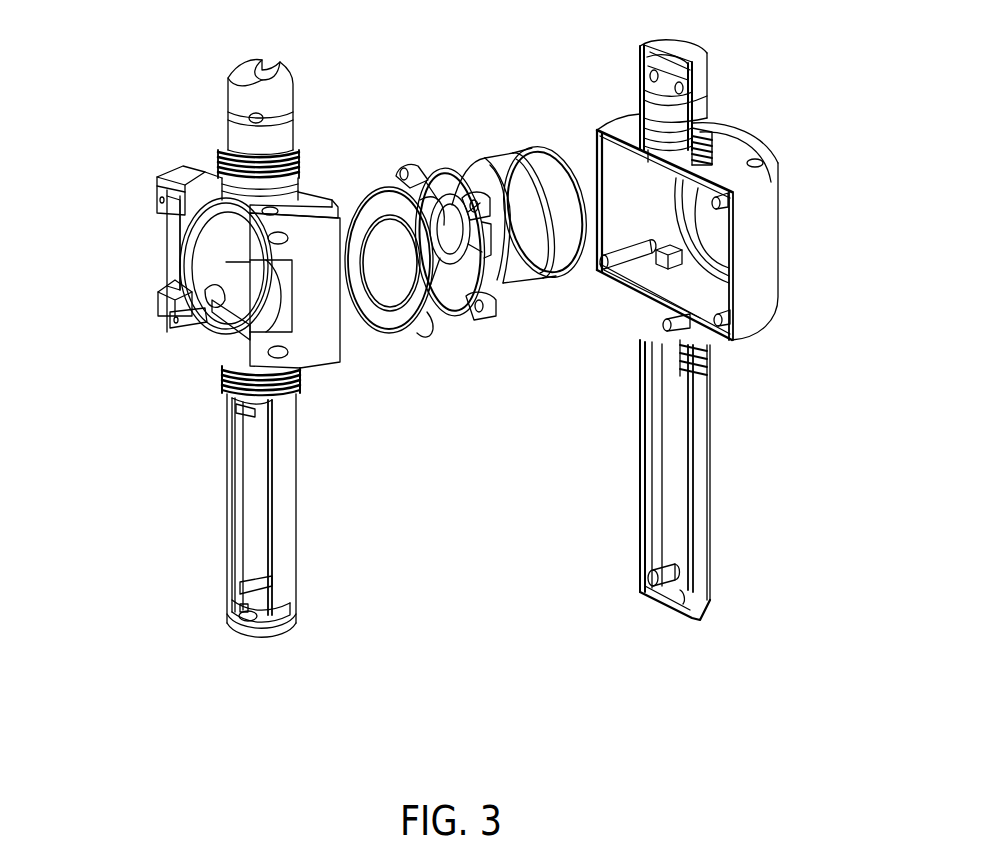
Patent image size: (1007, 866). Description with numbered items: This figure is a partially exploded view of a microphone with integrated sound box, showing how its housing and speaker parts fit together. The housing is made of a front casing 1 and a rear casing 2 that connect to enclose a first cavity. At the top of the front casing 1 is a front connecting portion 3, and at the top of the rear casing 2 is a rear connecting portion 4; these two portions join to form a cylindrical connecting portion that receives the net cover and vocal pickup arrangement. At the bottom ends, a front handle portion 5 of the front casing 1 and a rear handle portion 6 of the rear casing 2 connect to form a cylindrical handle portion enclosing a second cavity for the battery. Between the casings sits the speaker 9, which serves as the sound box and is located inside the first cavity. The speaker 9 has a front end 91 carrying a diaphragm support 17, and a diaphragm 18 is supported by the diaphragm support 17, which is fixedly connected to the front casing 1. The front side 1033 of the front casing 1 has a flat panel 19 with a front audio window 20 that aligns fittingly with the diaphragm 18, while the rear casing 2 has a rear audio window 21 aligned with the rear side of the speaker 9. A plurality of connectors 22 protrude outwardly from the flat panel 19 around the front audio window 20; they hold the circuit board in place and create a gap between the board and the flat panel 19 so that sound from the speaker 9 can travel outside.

The front casing 1 is at (302, 347).
The rear casing 2 is at (765, 310).
The front connecting portion 3 is at (250, 100).
The rear connecting portion 4 is at (700, 75).
The front handle portion 5 is at (280, 517).
The rear handle portion 6 is at (695, 505).
The speaker 9 is at (495, 190).
The diaphragm support 17 is at (495, 285).
The diaphragm 18 is at (427, 312).
The flat panel 19 is at (300, 300).
The front audio window 20 is at (220, 252).
The rear audio window 21 is at (715, 218).
The connectors 22 is at (170, 196).
The front end 91 is at (383, 208).
The front side 1033 is at (176, 270).